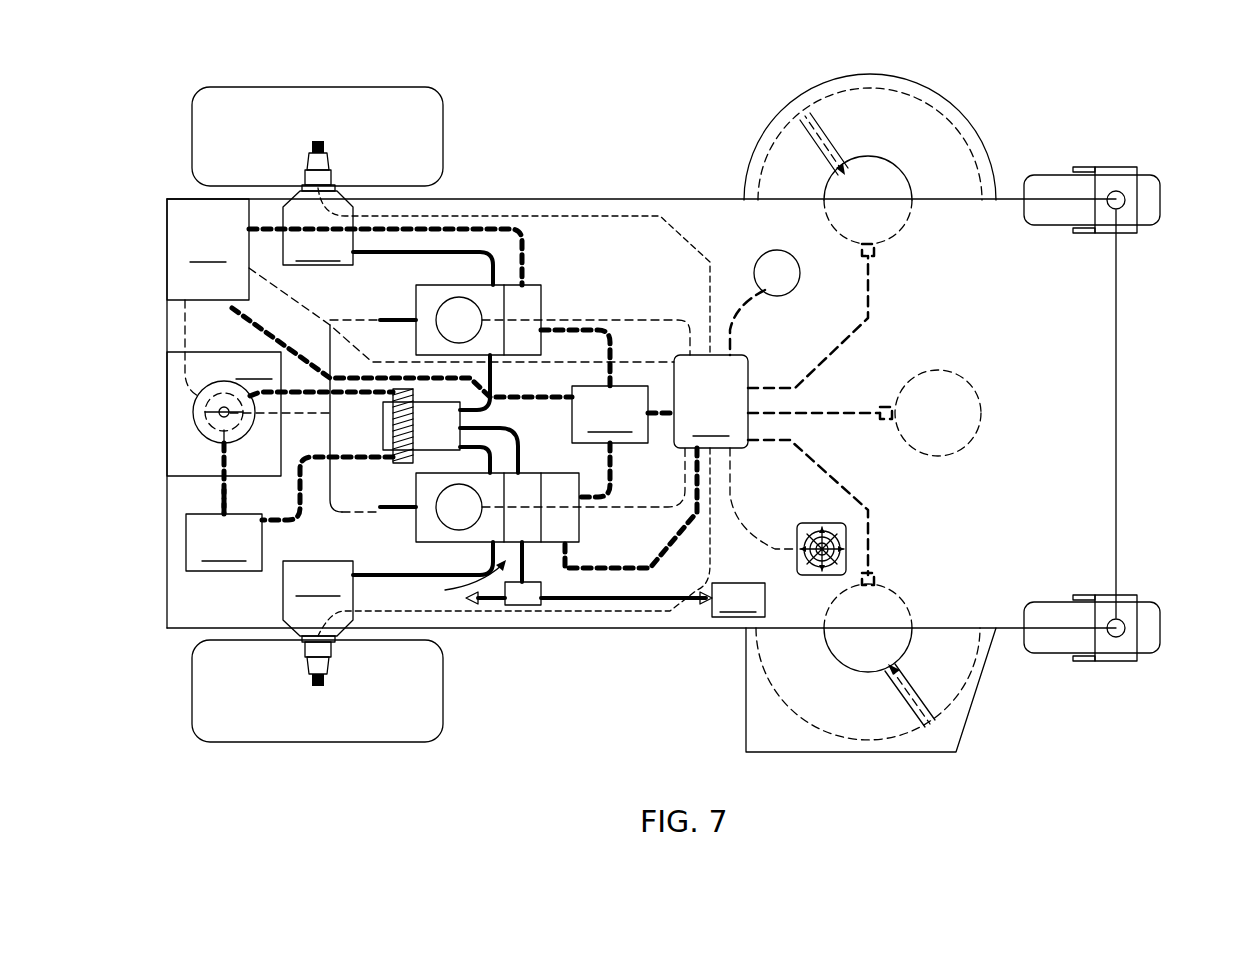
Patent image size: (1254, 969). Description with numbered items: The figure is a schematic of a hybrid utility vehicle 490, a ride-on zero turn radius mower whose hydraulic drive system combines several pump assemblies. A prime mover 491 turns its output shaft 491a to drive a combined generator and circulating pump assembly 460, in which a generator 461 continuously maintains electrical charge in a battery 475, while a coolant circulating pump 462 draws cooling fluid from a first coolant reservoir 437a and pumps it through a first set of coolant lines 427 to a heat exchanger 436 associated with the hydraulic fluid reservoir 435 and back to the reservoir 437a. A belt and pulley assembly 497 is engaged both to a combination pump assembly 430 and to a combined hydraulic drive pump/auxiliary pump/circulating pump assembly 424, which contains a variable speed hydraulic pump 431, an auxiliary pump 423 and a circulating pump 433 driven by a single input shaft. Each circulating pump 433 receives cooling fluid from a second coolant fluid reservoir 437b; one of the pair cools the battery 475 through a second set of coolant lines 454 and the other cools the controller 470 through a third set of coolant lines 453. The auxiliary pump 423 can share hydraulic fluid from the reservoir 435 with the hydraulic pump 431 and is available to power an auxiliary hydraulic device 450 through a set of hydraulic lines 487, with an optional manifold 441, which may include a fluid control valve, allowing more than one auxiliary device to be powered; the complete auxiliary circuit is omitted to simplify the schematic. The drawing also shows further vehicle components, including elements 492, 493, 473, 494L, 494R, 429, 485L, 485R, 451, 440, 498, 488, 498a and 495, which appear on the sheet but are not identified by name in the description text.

The hybrid utility vehicle 490 is at (146, 108).
The frame 492 is at (522, 199).
The tire 493 is at (322, 87).
The strut 473 is at (330, 181).
The left wheel assembly 494L is at (318, 228).
The right wheel assembly 494R is at (318, 598).
The battery 475 is at (208, 298).
The prime mover 491 is at (224, 414).
The combined generator and circulating pump assembly 460 is at (186, 401).
The output shaft 491a is at (222, 412).
The generator 461 is at (216, 431).
The coolant circulating pump 462 is at (234, 430).
The belt and pulley assembly 497 is at (330, 416).
The hydraulic fluid reservoir 435 is at (393, 408).
The heat exchanger 436 is at (400, 463).
The variable speed hydraulic pump 431 is at (458, 285).
The electric motor 429 is at (437, 312).
The circulating pump 433 is at (543, 305).
The auxiliary pump 423 is at (533, 471).
The left hydraulic line 485L is at (387, 256).
The right hydraulic line 485R is at (387, 572).
The combination pump assembly 430 is at (538, 266).
The second set of coolant lines 454 is at (612, 335).
The third set of coolant lines 453 is at (612, 470).
The second coolant fluid reservoir 437b is at (610, 414).
The first coolant reservoir 437a is at (224, 542).
The first set of coolant lines 427 is at (228, 486).
The controller 470 is at (687, 414).
The auxiliary electric motor 451 is at (782, 297).
The sensor 440 is at (808, 523).
The manifold 441 is at (522, 605).
The set of hydraulic lines 487 is at (528, 566).
The combined hydraulic drive pump/auxiliary pump/circulating pump assembly 424 is at (455, 582).
The auxiliary hydraulic device 450 is at (738, 600).
The wheel 498 is at (862, 78).
The hub motor 488 is at (902, 236).
The wheel spoke 498a is at (832, 128).
The steering actuator 495 is at (1162, 200).